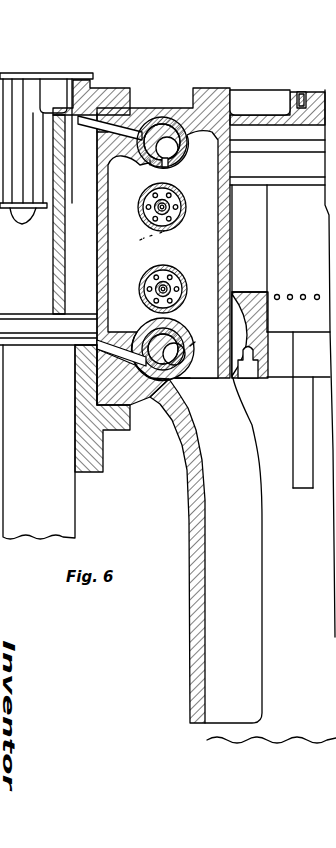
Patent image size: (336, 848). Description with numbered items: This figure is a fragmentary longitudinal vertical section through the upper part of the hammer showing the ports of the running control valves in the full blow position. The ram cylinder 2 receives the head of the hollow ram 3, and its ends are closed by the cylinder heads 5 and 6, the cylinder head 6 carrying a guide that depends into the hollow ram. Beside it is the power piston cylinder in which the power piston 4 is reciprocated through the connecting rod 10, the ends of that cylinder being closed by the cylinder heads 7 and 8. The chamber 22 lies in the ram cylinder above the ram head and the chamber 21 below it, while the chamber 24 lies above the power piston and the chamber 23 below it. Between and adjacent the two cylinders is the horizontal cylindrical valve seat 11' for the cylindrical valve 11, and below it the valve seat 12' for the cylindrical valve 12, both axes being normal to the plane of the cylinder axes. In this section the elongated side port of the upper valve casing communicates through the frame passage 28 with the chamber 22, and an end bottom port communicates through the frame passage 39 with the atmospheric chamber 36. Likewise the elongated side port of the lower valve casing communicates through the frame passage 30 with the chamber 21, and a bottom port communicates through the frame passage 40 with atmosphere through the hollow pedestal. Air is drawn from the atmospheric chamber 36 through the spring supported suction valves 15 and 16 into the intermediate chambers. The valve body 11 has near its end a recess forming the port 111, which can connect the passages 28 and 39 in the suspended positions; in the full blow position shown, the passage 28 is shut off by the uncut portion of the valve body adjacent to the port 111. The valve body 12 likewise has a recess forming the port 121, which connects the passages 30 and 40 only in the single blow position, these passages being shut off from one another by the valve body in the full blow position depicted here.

The ram cylinder 2 is at (192, 483).
The hollow ram 3 is at (39, 442).
The power piston 4 is at (282, 363).
The cylinder head 5 is at (107, 454).
The cylinder head 6 is at (101, 94).
The cylinder head 7 is at (215, 96).
The cylinder head 8 is at (268, 356).
The connecting rod 10 is at (303, 459).
The cylindrical valve 11 is at (162, 122).
The valve seat 11' is at (176, 114).
The cylindrical valve 12 is at (155, 341).
The valve seat 12' is at (133, 390).
The suction valve 15 is at (149, 223).
The suction valve 16 is at (184, 284).
The chamber 21 is at (85, 350).
The chamber 22 is at (75, 259).
The chamber 23 is at (276, 281).
The chamber 24 is at (257, 122).
The frame passage 28 is at (110, 129).
The frame passage 30 is at (121, 358).
The atmospheric chamber 36 is at (172, 242).
The frame passage 39 is at (157, 173).
The frame passage 40 is at (181, 383).
The port 111 is at (101, 170).
The port 121 is at (174, 352).